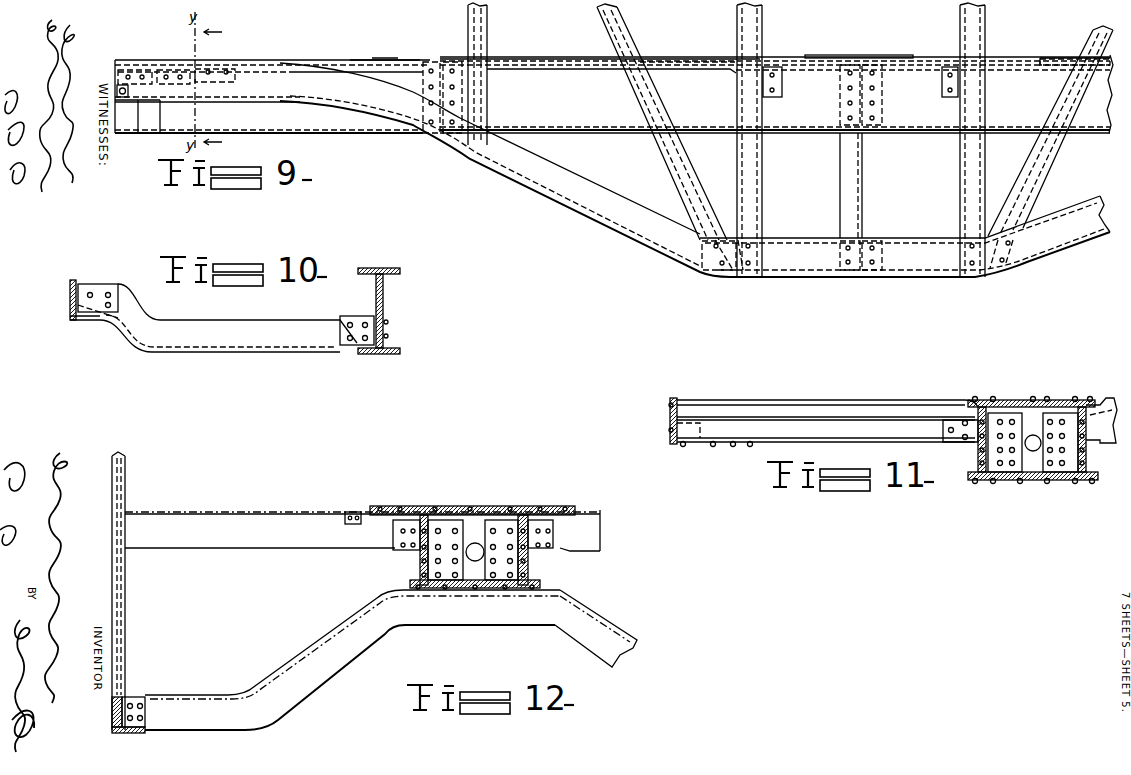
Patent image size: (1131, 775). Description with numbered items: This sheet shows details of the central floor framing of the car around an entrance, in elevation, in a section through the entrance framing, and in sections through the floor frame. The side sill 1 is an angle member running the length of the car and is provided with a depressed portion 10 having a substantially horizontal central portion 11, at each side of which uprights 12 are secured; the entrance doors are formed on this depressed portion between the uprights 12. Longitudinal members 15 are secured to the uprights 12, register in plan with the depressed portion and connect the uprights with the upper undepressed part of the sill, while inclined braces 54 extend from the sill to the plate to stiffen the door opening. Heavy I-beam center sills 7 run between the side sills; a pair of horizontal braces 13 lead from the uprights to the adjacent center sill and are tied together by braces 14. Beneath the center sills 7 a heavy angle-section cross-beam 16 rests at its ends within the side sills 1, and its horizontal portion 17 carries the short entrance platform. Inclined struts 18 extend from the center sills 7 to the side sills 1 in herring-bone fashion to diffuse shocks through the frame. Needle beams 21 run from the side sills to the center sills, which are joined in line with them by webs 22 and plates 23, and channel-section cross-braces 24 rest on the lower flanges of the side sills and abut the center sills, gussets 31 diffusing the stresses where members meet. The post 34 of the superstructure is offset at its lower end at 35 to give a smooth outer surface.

In FIG. 9, the side sill 1 is at (272, 96).
In FIG. 10, the side sill 1 is at (72, 292).
In FIG. 11, the side sill 1 is at (670, 428).
In FIG. 9, the center sill 7 is at (776, 94).
In FIG. 10, the center sill 7 is at (383, 298).
In FIG. 11, the center sill 7 is at (978, 453).
In FIG. 12, the center sill 7 is at (422, 566).
In FIG. 9, the depressed portion 10 is at (505, 170).
In FIG. 9, the horizontal central portion 11 is at (905, 236).
In FIG. 12, the horizontal central portion 11 is at (113, 716).
In FIG. 9, the upright 12 is at (738, 22).
In FIG. 12, the horizontal brace 13 is at (362, 530).
In FIG. 9, the brace 14 is at (862, 94).
In FIG. 12, the brace 14 is at (348, 512).
In FIG. 9, the longitudinal member 15 is at (530, 61).
In FIG. 9, the cross-beam 16 is at (858, 179).
In FIG. 12, the cross-beam 16 is at (467, 634).
In FIG. 12, the horizontal portion 17 is at (188, 695).
In FIG. 11, the inclined strut 18 is at (795, 401).
In FIG. 11, the needle beam 21 is at (837, 442).
In FIG. 11, the web 22 is at (1030, 480).
In FIG. 11, the plate 23 is at (1030, 400).
In FIG. 9, the cross-brace 24 is at (440, 95).
In FIG. 9, the gusset 31 is at (398, 60).
In FIG. 9, the post 34 is at (469, 22).
In FIG. 12, the offset 35 is at (128, 697).
In FIG. 9, the inclined brace 54 is at (672, 166).